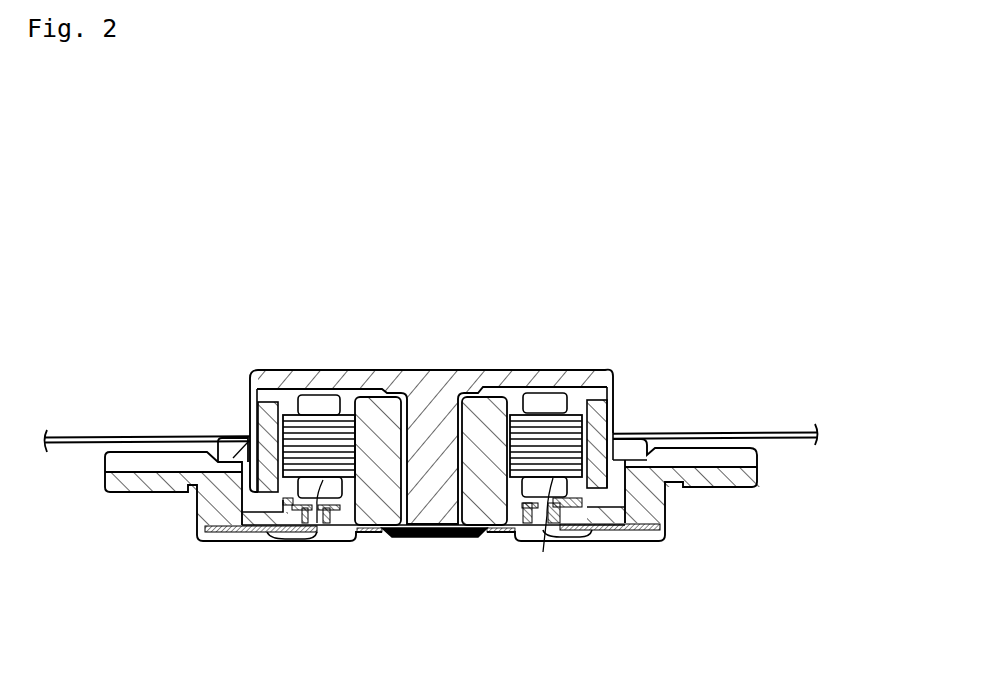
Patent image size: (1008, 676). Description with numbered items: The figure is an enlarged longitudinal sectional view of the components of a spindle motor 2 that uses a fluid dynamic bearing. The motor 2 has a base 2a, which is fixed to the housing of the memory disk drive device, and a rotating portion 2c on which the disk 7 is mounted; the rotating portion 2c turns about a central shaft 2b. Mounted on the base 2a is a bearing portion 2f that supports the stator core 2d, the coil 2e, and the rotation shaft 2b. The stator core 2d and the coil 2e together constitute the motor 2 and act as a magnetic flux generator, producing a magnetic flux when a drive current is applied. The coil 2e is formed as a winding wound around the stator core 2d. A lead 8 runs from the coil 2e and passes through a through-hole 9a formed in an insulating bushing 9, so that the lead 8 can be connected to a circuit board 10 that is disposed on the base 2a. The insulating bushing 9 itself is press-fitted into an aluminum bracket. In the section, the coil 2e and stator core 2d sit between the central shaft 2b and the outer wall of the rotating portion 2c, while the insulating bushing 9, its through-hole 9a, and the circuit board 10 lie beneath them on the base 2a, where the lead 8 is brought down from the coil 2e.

The spindle motor 2 is at (440, 347).
The base 2a is at (648, 498).
The central shaft 2b is at (433, 472).
The rotating portion 2c is at (585, 371).
The stator core 2d is at (540, 408).
The coil 2e is at (533, 460).
The bearing portion 2f is at (482, 490).
The disk 7 is at (722, 434).
The lead 8 is at (293, 540).
The insulating bushing 9 is at (578, 513).
The through-hole 9a is at (548, 497).
The circuit board 10 is at (604, 528).